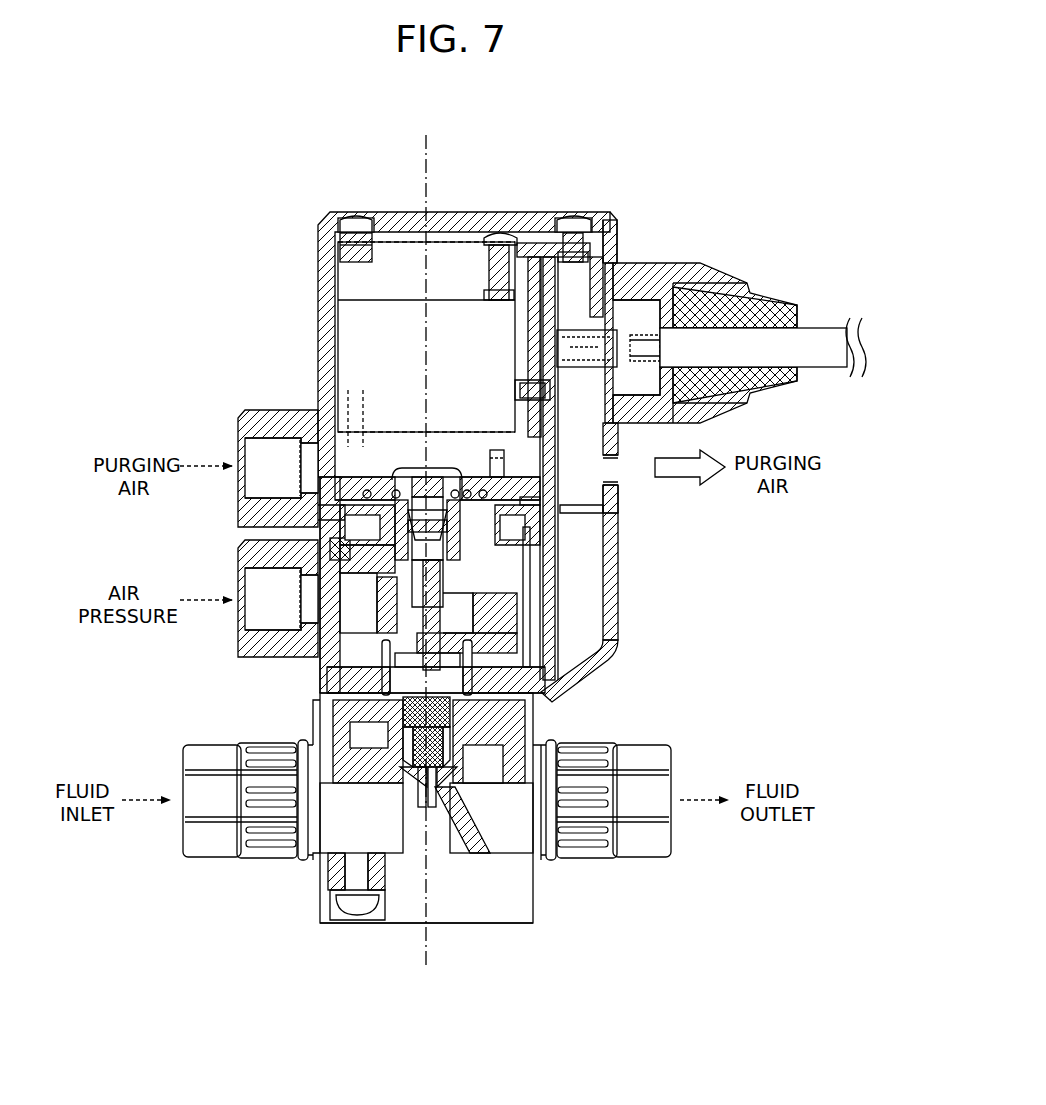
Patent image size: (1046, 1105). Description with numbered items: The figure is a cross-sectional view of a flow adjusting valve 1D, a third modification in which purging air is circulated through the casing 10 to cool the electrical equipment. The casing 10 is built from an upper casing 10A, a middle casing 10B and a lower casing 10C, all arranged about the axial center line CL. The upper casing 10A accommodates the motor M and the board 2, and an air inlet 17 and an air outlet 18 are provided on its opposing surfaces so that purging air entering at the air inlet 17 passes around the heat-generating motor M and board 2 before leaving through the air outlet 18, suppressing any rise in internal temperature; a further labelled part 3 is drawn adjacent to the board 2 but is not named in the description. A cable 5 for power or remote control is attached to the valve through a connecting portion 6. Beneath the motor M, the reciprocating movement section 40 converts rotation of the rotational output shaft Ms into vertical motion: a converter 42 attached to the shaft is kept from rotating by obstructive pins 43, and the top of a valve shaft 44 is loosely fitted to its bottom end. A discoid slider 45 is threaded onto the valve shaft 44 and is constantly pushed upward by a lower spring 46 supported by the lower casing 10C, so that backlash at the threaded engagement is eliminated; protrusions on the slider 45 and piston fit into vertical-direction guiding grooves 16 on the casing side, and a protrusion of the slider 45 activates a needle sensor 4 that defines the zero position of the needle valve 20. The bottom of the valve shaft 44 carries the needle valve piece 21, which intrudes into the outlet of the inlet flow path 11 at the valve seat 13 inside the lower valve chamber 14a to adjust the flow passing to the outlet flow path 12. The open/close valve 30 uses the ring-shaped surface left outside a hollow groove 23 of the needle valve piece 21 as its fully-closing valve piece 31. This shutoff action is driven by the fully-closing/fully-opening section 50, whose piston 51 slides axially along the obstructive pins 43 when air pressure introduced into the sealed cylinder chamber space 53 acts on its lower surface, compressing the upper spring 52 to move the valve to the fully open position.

The flow adjusting valve 1D is at (636, 96).
The casing 10 is at (460, 932).
The upper casing 10A is at (318, 272).
The middle casing 10B is at (606, 570).
The lower casing 10C is at (533, 925).
The inlet flow path 11 is at (355, 795).
The outlet flow path 12 is at (510, 803).
The valve seat 13 is at (345, 740).
The lower valve chamber 14a is at (470, 758).
The vertical-direction guiding grooves 16 is at (528, 570).
The air inlet 17 is at (332, 440).
The air outlet 18 is at (620, 470).
The board 2 is at (556, 452).
The needle valve 20 is at (413, 807).
The needle valve piece 21 is at (437, 813).
The hollow groove 23 is at (467, 790).
The connector 3 is at (536, 501).
The open/close valve 30 is at (510, 780).
The fully-closing valve piece 31 is at (418, 752).
The needle sensor 4 is at (606, 658).
The reciprocating movement section 40 is at (390, 587).
The converter 42 is at (455, 618).
The obstructive pins 43 is at (465, 634).
The valve shaft 44 is at (500, 692).
The slider 45 is at (541, 694).
The lower spring 46 is at (387, 693).
The cable 5 is at (818, 322).
The fully-closing/fully-opening section 50 is at (345, 535).
The piston 51 is at (345, 512).
The upper spring 52 is at (370, 485).
The cylinder chamber space 53 is at (357, 583).
The connecting portion 6 is at (727, 278).
The motor M is at (355, 326).
The rotational output shaft Ms is at (434, 485).
The axial center line CL is at (424, 161).